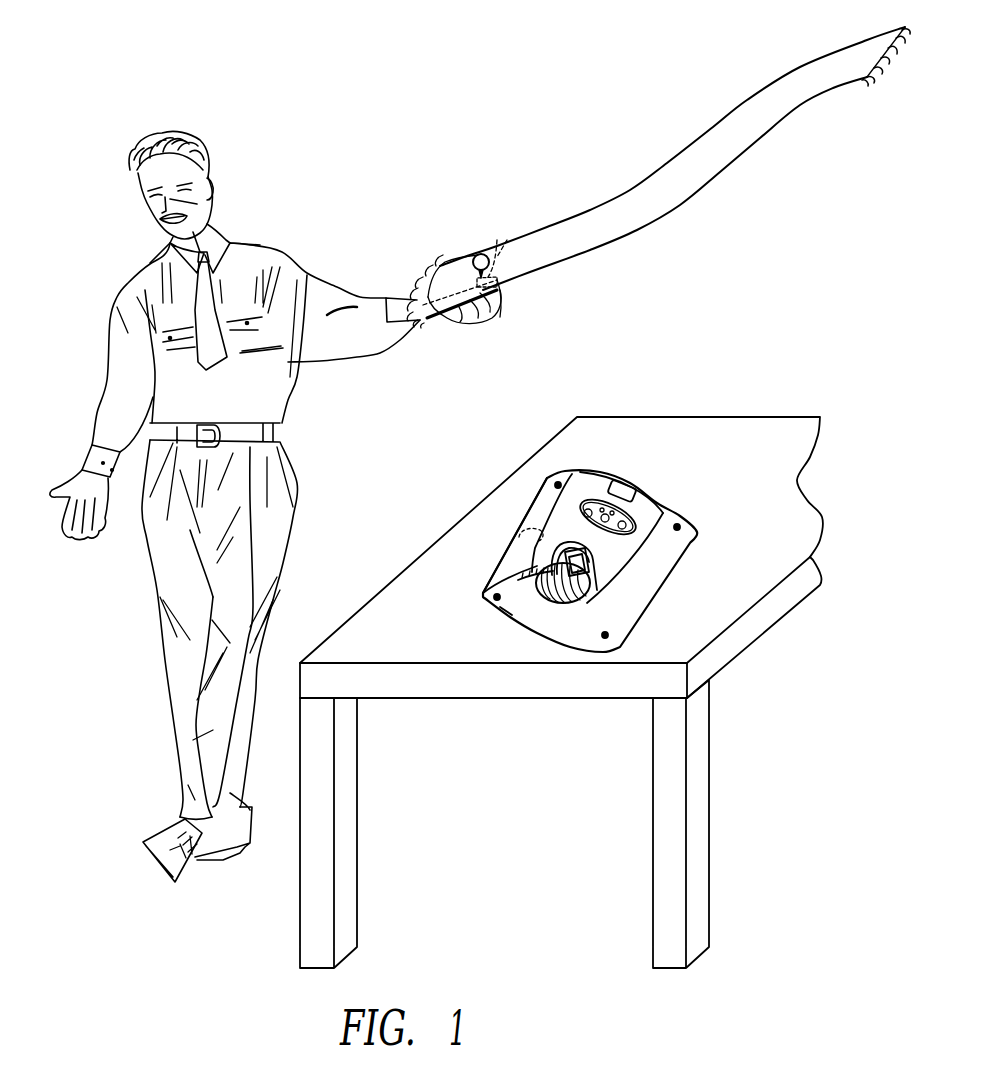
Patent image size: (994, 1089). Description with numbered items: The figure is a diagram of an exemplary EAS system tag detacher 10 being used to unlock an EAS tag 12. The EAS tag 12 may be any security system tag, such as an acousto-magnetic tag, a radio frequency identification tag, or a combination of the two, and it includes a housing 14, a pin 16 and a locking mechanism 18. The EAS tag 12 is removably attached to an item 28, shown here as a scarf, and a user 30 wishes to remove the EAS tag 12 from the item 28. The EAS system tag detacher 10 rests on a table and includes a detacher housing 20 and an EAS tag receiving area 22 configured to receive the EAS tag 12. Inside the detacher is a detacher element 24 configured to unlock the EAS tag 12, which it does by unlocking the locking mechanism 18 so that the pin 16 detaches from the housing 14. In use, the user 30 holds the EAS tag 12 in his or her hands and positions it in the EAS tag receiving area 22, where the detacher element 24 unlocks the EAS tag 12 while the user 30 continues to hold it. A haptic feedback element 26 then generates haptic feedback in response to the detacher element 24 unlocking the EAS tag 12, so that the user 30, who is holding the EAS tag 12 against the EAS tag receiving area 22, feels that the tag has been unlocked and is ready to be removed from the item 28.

The EAS system tag detacher 10 is at (650, 480).
The EAS tag 12 is at (523, 292).
The housing 14 is at (463, 315).
The pin 16 is at (463, 260).
The locking mechanism 18 is at (497, 257).
The detacher housing 20 is at (483, 598).
The EAS tag receiving area 22 is at (582, 582).
The detacher element 24 is at (572, 572).
The haptic feedback element 26 is at (520, 525).
The item 28 is at (728, 125).
The user 30 is at (233, 135).